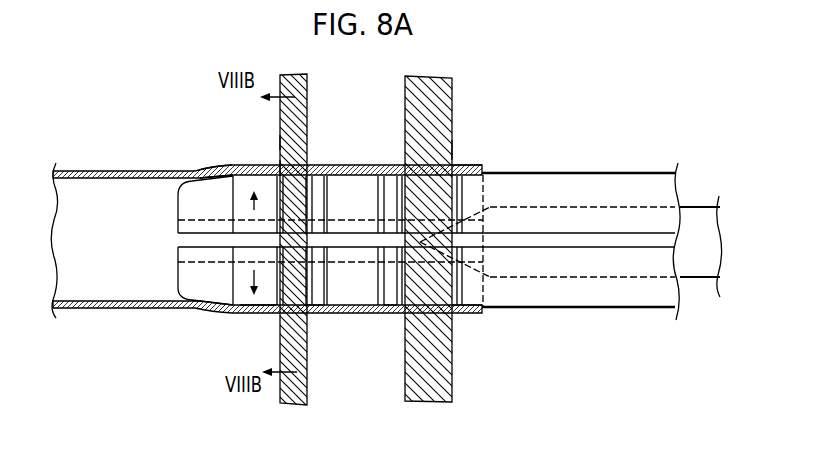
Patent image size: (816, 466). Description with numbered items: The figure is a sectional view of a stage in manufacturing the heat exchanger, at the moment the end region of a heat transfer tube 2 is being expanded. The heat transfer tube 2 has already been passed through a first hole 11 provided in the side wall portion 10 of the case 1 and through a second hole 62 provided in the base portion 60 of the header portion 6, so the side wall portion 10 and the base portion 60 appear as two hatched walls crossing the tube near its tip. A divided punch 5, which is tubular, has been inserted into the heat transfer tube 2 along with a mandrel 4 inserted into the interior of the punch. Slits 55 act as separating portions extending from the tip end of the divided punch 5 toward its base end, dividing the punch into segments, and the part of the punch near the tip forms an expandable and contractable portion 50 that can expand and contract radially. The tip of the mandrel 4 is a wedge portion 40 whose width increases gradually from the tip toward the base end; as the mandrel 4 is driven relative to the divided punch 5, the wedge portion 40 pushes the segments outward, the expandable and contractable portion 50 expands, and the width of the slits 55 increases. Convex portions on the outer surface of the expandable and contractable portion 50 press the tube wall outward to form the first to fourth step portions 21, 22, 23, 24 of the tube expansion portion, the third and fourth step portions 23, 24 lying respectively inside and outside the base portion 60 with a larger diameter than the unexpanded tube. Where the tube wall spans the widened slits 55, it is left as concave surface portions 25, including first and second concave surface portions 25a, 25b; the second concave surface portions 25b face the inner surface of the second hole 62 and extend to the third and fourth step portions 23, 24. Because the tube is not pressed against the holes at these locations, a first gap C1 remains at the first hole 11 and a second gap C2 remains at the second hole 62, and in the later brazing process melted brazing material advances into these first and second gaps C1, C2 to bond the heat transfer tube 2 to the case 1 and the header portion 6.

The case 1 is at (296, 230).
The heat transfer tube 2 is at (118, 169).
The mandrel 4 is at (688, 222).
The divided punch 5 is at (172, 221).
The header portion 6 is at (456, 226).
The side wall portion 10 is at (309, 102).
The first hole 11 is at (279, 165).
The first step portion 21 is at (267, 315).
The second step portion 22 is at (313, 317).
The third step portion 23 is at (388, 317).
The fourth step portion 24 is at (465, 317).
The concave surface portion 25 is at (342, 164).
The first concave surface portion 25a is at (298, 164).
The second concave surface portion 25b is at (398, 164).
The wedge portion 40 is at (470, 250).
The expandable and contractable portion 50 is at (198, 166).
The slit 55 is at (186, 239).
The base portion 60 is at (453, 110).
The second hole 62 is at (462, 162).
The first gap C1 is at (280, 140).
The second gap C2 is at (453, 157).